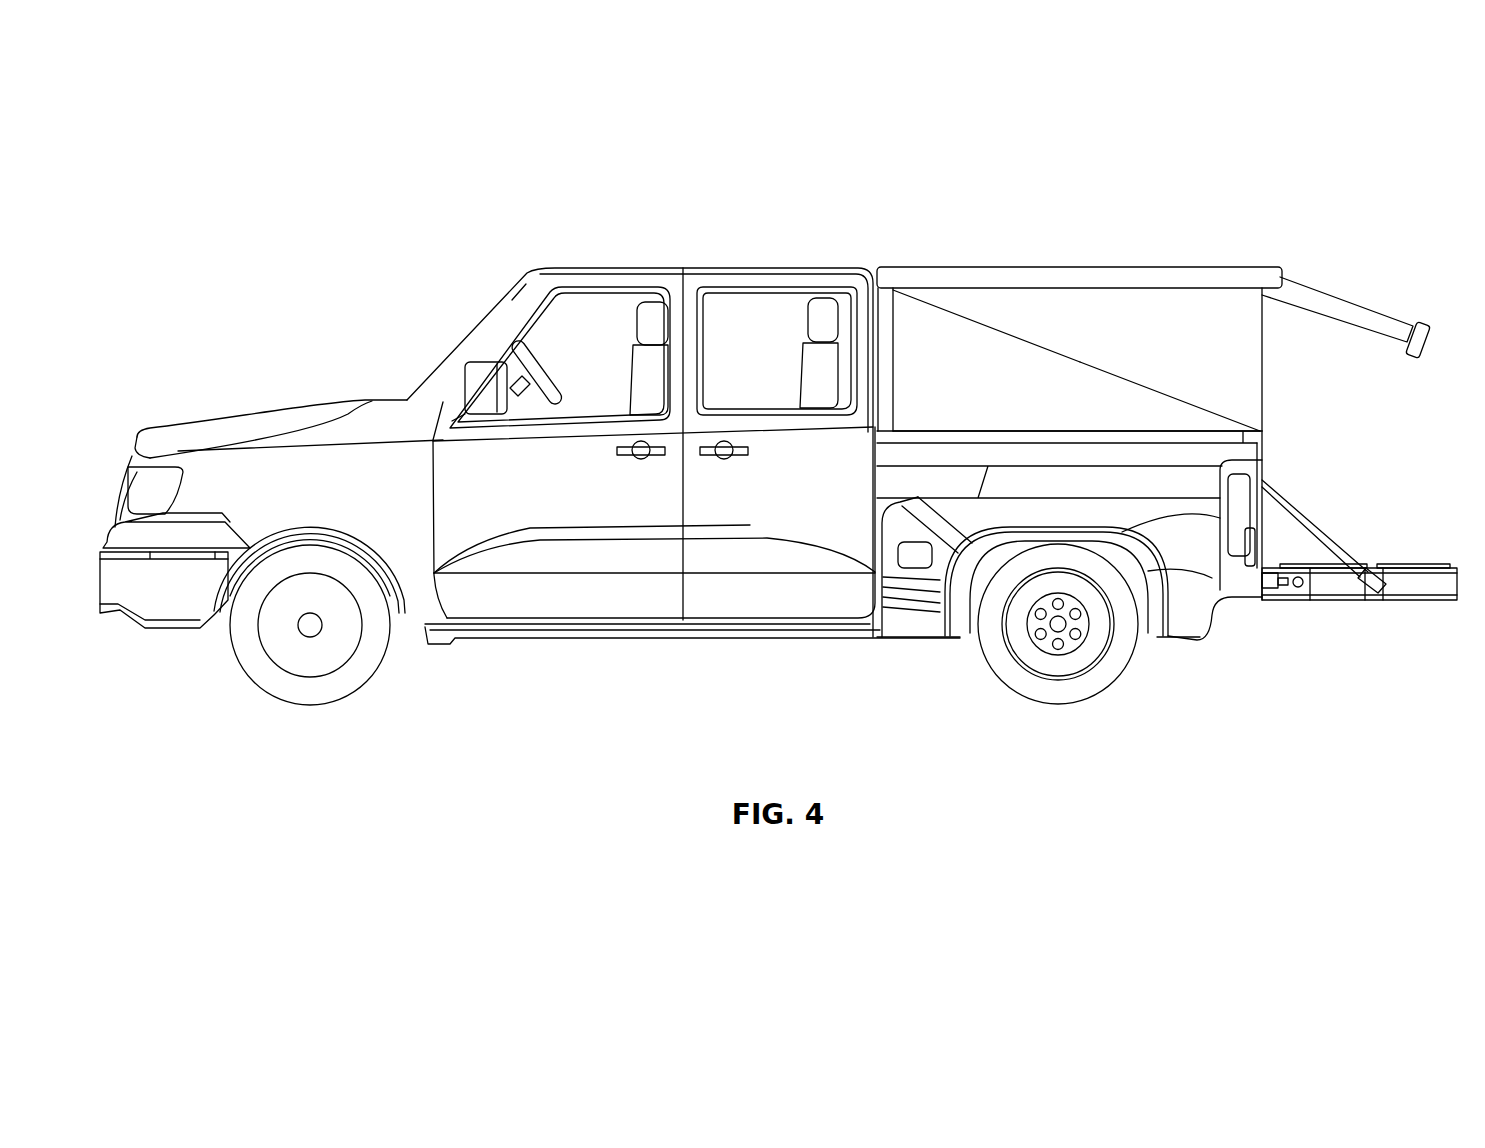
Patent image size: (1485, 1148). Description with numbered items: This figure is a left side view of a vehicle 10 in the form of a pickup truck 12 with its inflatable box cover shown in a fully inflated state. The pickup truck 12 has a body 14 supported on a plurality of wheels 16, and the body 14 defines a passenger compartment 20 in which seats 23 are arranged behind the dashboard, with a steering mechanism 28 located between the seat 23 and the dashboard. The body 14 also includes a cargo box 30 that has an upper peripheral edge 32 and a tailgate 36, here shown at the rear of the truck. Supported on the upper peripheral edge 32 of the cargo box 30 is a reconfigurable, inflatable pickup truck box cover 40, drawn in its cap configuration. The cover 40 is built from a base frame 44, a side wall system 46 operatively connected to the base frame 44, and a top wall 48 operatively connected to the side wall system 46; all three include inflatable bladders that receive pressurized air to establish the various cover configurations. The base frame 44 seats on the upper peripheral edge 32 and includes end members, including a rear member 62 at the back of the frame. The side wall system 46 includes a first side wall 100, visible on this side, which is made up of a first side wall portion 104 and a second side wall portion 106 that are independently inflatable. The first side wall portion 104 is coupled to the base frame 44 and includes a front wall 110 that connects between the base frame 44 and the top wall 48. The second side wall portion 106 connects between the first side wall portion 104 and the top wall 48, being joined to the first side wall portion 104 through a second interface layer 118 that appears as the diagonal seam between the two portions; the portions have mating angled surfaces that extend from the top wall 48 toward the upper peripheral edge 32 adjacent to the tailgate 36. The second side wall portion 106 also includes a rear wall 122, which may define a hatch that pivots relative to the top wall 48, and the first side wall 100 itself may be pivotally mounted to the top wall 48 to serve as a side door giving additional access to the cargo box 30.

The vehicle 10 is at (262, 207).
The pickup truck 12 is at (390, 395).
The body 14 is at (632, 268).
The wheels 16 is at (270, 682).
The passenger compartment 20 is at (612, 315).
The seats 23 is at (648, 398).
The steering mechanism 28 is at (533, 367).
The cargo box 30 is at (1170, 530).
The upper peripheral edge 32 is at (1105, 440).
The tailgate 36 is at (1433, 622).
The reconfigurable, inflatable pickup truck box cover 40 is at (1200, 252).
The base frame 44 is at (1053, 438).
The side wall system 46 is at (1060, 373).
The top wall 48 is at (1010, 266).
The rear member 62 is at (1425, 345).
The first side wall 100 is at (1267, 417).
The first side wall portion 104 is at (920, 322).
The second side wall portion 106 is at (1220, 323).
The front wall 110 is at (874, 345).
The second interface layer 118 is at (1013, 363).
The rear wall 122 is at (1317, 290).